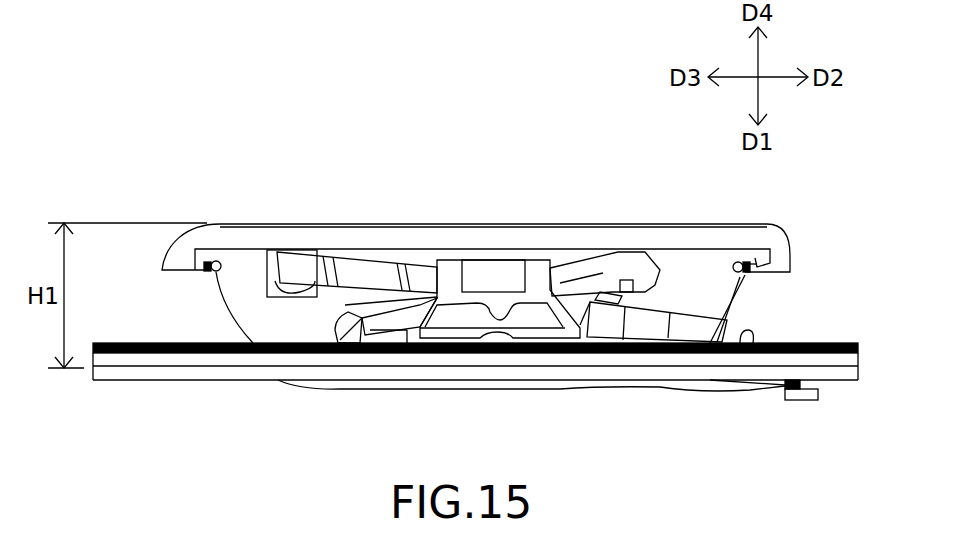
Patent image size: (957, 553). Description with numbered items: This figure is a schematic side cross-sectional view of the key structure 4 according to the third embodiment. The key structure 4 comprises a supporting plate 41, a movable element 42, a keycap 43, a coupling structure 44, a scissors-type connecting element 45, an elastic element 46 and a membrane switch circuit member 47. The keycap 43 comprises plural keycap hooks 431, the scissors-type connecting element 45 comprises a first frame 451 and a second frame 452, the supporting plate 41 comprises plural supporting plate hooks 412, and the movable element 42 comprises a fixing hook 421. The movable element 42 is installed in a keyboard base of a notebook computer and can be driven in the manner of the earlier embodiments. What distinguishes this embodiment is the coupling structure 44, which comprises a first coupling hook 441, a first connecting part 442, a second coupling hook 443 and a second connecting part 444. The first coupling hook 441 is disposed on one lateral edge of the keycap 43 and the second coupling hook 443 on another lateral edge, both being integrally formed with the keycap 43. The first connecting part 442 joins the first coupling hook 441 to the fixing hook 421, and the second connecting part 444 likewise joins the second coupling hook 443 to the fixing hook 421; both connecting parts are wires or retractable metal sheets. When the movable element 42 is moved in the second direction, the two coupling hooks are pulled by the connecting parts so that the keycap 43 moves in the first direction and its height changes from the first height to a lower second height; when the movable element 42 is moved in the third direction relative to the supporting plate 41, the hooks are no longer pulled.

The key structure 4 is at (216, 144).
The coupling structure 44 is at (356, 44).
The first coupling hook 441 is at (195, 267).
The first connecting part 442 is at (421, 388).
The second coupling hook 443 is at (767, 253).
The second connecting part 444 is at (785, 383).
The supporting plate 41 is at (153, 363).
The supporting plate hook 412 is at (745, 330).
The movable element 42 is at (843, 374).
The fixing hook 421 is at (803, 396).
The keycap 43 is at (646, 223).
The keycap hook 431 is at (670, 267).
The scissors-type connecting element 45 is at (380, 273).
The first frame 451 is at (350, 270).
The second frame 452 is at (342, 335).
The elastic element 46 is at (538, 267).
The membrane switch circuit member 47 is at (813, 343).